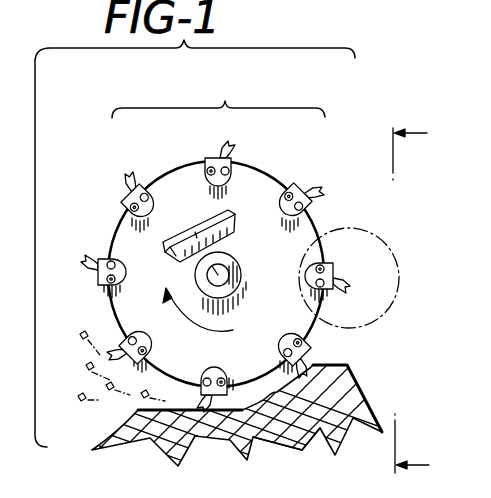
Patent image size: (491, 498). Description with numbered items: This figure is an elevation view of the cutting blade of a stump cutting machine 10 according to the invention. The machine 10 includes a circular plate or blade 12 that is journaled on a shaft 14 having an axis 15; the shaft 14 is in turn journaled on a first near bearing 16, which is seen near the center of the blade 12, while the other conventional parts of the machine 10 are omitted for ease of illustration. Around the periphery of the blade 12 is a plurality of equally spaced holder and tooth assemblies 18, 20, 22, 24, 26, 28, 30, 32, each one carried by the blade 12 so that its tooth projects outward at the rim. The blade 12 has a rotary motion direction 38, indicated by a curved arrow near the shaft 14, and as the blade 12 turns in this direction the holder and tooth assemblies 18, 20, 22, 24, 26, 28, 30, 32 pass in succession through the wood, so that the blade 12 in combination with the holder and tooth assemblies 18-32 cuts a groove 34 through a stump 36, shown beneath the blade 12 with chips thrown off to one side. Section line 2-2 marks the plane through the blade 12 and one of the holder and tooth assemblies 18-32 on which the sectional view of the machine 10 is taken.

The section line 2- 2 is at (418, 300).
The stump cutting machine 10 is at (218, 98).
The circular plate or blade 12 is at (175, 190).
The shaft 14 is at (236, 292).
The axis 15 is at (240, 262).
The first near bearing 16 is at (236, 250).
The holder and tooth assembly 18 is at (334, 268).
The holder and tooth assembly 20 is at (308, 350).
The holder and tooth assembly 22 is at (232, 372).
The holder and tooth assembly 24 is at (152, 352).
The holder and tooth assembly 26 is at (104, 287).
The holder and tooth assembly 28 is at (128, 205).
The holder and tooth assembly 30 is at (207, 158).
The holder and tooth assembly 32 is at (290, 186).
The groove 34 is at (247, 407).
The stump 36 is at (303, 451).
The rotary motion direction 38 is at (162, 320).